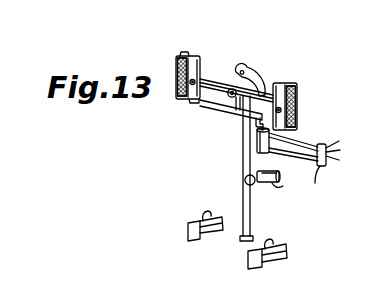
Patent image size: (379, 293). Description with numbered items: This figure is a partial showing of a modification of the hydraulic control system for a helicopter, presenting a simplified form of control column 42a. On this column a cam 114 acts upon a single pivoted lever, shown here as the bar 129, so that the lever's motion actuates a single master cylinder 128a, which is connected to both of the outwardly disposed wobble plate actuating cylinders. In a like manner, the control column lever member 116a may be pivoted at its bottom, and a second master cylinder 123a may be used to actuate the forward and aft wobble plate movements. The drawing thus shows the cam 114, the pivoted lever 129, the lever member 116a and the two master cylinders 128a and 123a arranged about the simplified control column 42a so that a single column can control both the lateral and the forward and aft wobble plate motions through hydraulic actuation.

The cam 114 is at (253, 75).
The lower bar 129 is at (213, 109).
The control column 42a is at (245, 140).
The master cylinder 128a is at (287, 143).
The control column lever member 116a is at (243, 173).
The master cylinder 123a is at (284, 187).